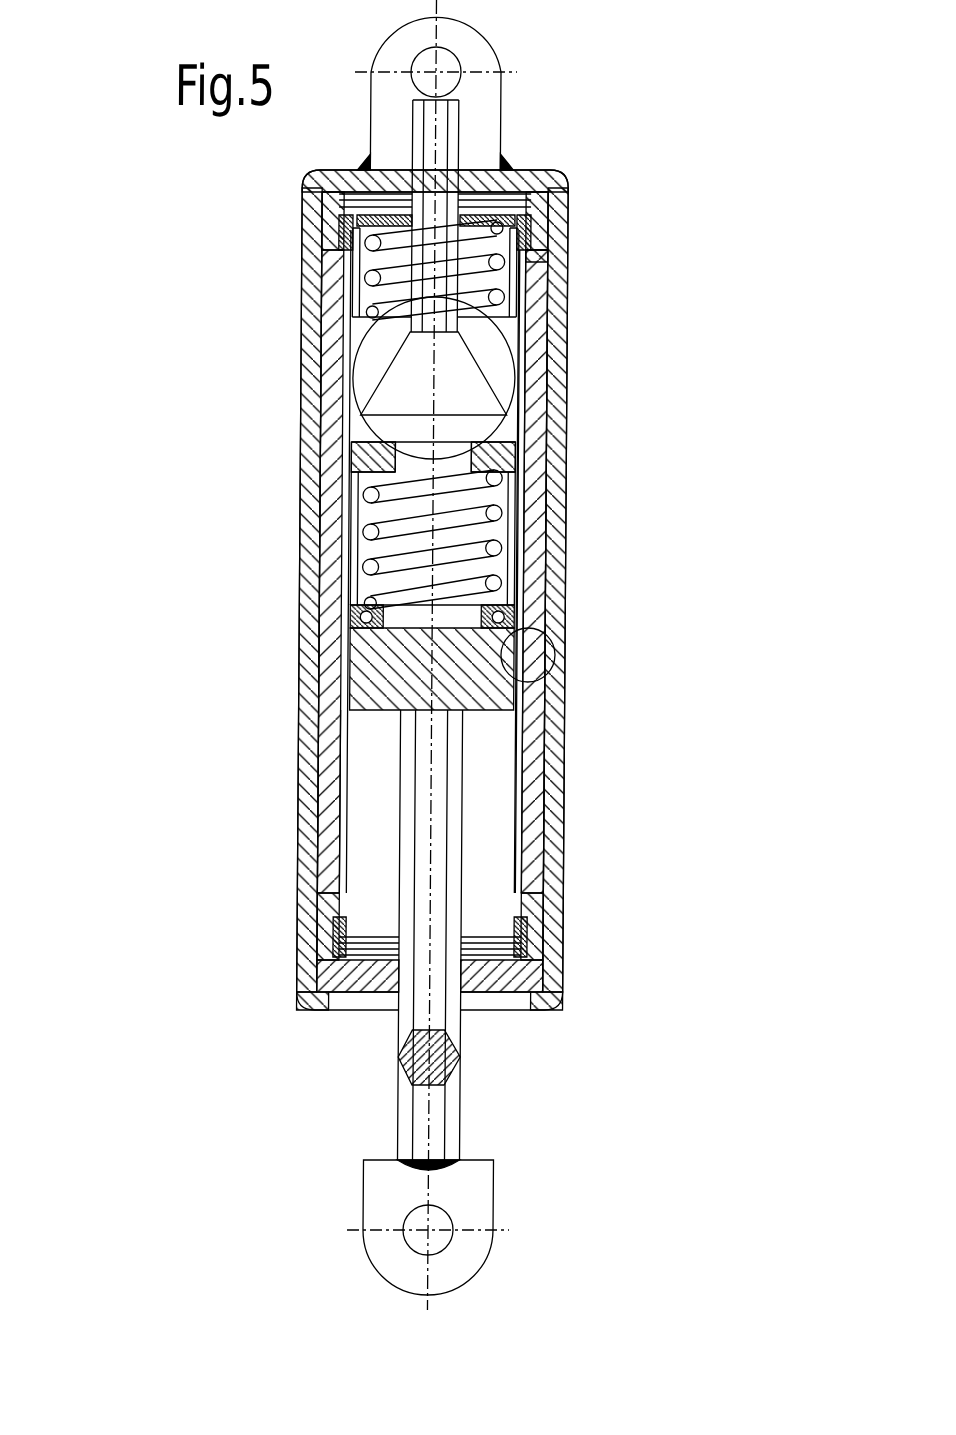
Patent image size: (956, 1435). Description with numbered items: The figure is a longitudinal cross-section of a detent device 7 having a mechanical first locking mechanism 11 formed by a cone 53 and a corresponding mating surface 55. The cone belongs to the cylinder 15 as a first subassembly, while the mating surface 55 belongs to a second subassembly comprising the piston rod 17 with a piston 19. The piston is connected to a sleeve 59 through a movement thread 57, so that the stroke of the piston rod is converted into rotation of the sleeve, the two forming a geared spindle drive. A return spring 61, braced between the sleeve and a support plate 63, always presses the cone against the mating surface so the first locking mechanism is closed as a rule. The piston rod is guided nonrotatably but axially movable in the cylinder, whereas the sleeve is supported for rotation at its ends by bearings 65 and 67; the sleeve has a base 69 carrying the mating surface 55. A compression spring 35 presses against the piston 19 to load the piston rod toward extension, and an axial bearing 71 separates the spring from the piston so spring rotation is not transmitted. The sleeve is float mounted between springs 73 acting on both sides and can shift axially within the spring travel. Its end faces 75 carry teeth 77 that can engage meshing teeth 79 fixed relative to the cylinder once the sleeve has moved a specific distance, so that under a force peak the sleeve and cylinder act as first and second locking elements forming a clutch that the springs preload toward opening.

The detent device 7 is at (128, 959).
The first locking mechanism 11 is at (340, 392).
The cylinder 15 is at (316, 680).
The piston rod 17 is at (429, 893).
The piston 19 is at (375, 690).
The compression spring 35 is at (500, 518).
The cone 53 is at (480, 392).
The mating surface 55 is at (494, 359).
The movement thread 57 is at (530, 636).
The sleeve 59 is at (536, 864).
The return spring 61 is at (543, 226).
The support plate 63 is at (488, 221).
The bearing 65 is at (325, 243).
The bearing 67 is at (310, 947).
The base 69 is at (387, 325).
The axial bearing 71 is at (356, 616).
The springs 73 is at (526, 193).
The end faces 75 is at (552, 261).
The teeth 77 is at (333, 899).
The meshing teeth 79 is at (344, 934).